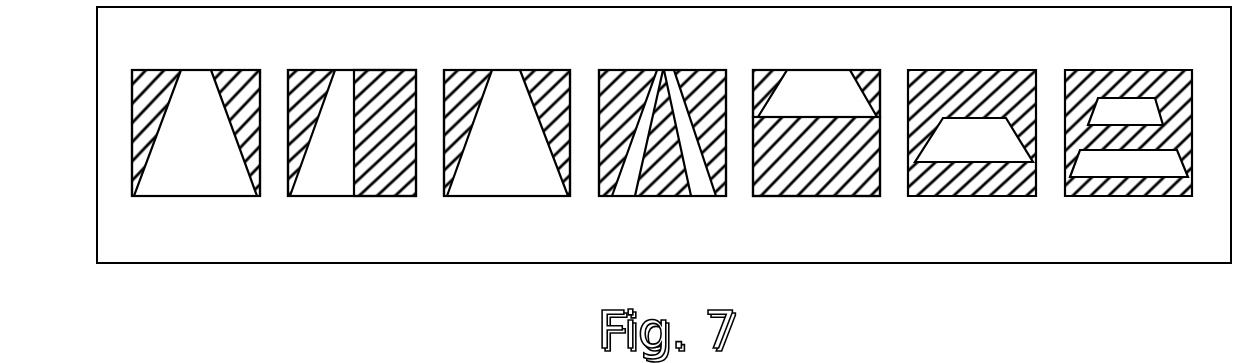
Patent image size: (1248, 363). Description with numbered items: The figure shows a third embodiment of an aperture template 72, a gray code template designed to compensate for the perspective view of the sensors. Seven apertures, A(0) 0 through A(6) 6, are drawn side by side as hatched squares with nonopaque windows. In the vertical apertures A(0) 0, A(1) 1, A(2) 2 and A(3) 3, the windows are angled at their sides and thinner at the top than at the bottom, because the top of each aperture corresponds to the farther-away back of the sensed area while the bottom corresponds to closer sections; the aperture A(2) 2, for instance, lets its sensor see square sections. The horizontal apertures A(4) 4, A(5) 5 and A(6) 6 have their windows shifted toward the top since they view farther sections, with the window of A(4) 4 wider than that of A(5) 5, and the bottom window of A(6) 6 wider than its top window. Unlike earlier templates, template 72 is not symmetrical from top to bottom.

The aperture template 72 is at (97, 151).
The aperture A 0 is at (196, 113).
The aperture A 1 is at (352, 113).
The aperture A 2 is at (507, 113).
The aperture A 3 is at (662, 113).
The aperture A 4 is at (816, 113).
The aperture A 5 is at (972, 113).
The aperture A 6 is at (1128, 113).